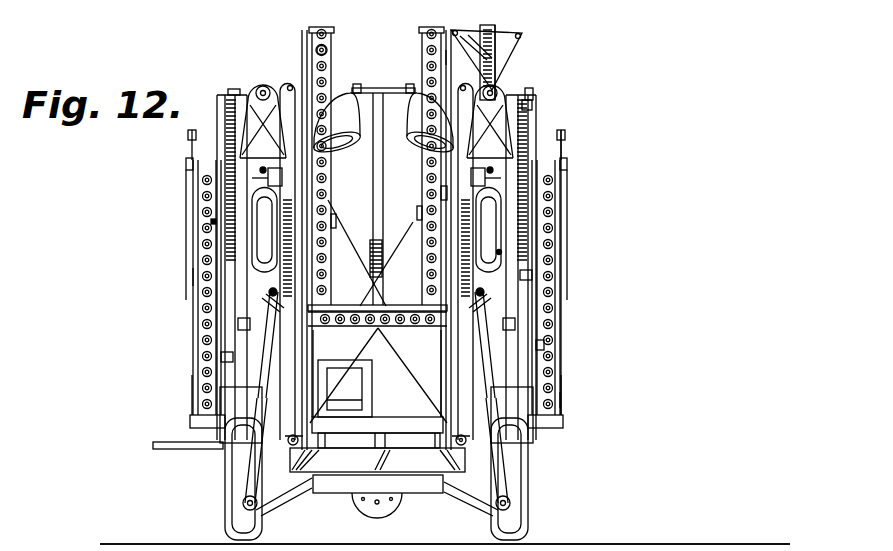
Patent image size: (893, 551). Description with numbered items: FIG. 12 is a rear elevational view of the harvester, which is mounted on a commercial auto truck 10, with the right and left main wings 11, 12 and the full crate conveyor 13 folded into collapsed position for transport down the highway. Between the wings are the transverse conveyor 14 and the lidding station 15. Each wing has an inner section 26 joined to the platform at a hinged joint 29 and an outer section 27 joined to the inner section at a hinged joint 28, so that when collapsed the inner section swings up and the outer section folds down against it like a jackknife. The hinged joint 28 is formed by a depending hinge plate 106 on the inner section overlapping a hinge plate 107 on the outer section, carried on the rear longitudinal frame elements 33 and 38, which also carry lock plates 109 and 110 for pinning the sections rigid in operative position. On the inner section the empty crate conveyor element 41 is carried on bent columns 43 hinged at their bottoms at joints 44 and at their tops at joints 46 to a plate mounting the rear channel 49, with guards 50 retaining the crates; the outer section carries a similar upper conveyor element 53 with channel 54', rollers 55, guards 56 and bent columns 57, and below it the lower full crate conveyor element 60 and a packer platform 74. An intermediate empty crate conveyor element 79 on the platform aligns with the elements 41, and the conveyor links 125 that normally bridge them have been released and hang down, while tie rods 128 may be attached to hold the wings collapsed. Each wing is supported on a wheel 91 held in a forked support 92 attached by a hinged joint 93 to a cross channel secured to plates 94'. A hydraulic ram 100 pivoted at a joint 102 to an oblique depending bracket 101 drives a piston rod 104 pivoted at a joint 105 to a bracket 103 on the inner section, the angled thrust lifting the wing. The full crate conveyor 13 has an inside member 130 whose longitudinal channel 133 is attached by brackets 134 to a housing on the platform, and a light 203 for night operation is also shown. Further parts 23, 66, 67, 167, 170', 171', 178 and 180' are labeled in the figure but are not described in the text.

The commercial auto truck 10 is at (344, 268).
The main wing 11 is at (584, 118).
The main wing 12 is at (124, 245).
The full crate conveyor 13 is at (508, 53).
The transverse conveyor 14 is at (357, 405).
The lidding station 15 is at (401, 247).
The axle housing 23 is at (338, 490).
The inner section 26 is at (270, 362).
The outer section 27 is at (221, 358).
The hinged joint 28 is at (268, 78).
The hinged joint 29 is at (294, 446).
The longitudinal frame element 33 is at (284, 132).
The longitudinal frame element 38 is at (237, 118).
The empty crate conveyor element 41 is at (343, 51).
The bent columns 43 is at (423, 150).
The hinged joint 44 is at (432, 193).
The hinged joint 46 is at (430, 90).
The channel 49 is at (327, 58).
The guards 50 is at (360, 88).
The upper conveyor element 53 is at (195, 284).
The channel 54' is at (378, 398).
The rollers 55 is at (207, 244).
The guards 56 is at (192, 382).
The bent columns 57 is at (194, 137).
The lower full crate conveyor element 60 is at (425, 444).
The frame rail 66 is at (308, 177).
The mast column 67 is at (232, 105).
The platform 74 is at (238, 328).
The intermediate empty crate conveyor element 79 is at (399, 299).
The wheel 91 is at (211, 222).
The forked supports 92 is at (253, 213).
The hinged joint 93 is at (266, 166).
The plates 94' is at (378, 229).
The hydraulic cylinders or rams 100 is at (256, 465).
The depending bracket 101 is at (277, 500).
The joint 102 is at (243, 505).
The bracket 103 is at (270, 293).
The piston rod 104 is at (254, 393).
The joint 105 is at (268, 298).
The hinge plate 106 is at (532, 113).
The hinge plate 107 is at (526, 107).
The lock plate 109 is at (232, 90).
The lock plate 110 is at (290, 82).
The conveyor link 125 is at (316, 360).
The tie rods 128 is at (432, 210).
The inside member 130 is at (506, 62).
The longitudinal channel 133 is at (524, 34).
The brackets 134 is at (544, 346).
The frame rail 167 is at (444, 57).
The plate 170' is at (378, 408).
The plate 171' is at (373, 389).
The A-frame brace 178 is at (366, 359).
The bar 180' is at (170, 458).
The light 203 is at (400, 133).